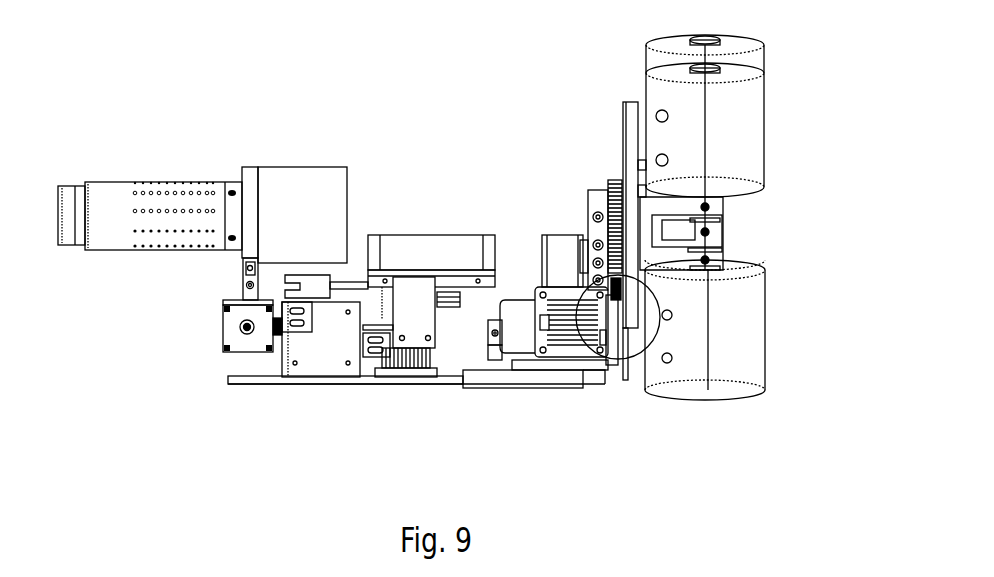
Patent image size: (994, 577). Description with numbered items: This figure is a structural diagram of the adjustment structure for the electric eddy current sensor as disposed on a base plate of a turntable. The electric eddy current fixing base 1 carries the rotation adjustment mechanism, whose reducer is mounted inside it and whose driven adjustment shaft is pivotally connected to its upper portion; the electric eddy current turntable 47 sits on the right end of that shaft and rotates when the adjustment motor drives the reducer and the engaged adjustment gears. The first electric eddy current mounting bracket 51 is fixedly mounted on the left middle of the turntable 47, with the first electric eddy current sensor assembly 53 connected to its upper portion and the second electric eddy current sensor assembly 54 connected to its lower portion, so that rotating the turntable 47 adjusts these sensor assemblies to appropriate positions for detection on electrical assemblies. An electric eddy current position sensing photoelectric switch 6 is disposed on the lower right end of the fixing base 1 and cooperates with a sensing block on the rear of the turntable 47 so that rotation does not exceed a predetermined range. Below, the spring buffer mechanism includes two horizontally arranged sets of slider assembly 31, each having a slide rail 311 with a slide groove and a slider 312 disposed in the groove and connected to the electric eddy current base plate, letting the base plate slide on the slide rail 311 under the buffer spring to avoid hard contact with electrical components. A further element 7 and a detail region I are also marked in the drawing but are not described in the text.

The electric eddy current fixing base 1 is at (588, 195).
The electric eddy current position sensing photoelectric switch 6 is at (613, 337).
The connecting member 7 is at (618, 295).
The slider assembly 31 is at (493, 385).
The slide rail 311 is at (477, 373).
The slider 312 is at (533, 363).
The electric eddy current turntable 47 is at (623, 122).
The first electric eddy current mounting bracket 51 is at (650, 260).
The first electric eddy current sensor assembly 53 is at (748, 140).
The second electric eddy current sensor assembly 54 is at (732, 335).
The detail region I is at (665, 333).